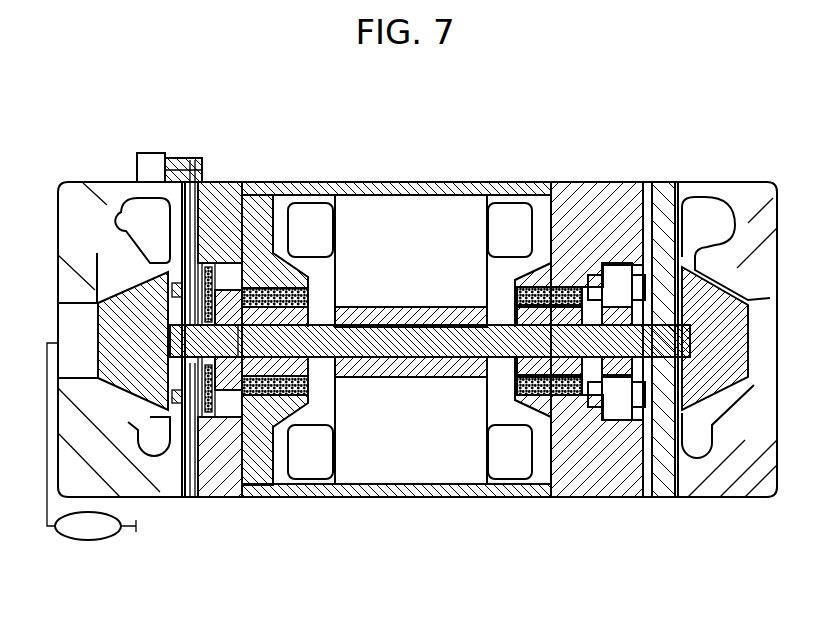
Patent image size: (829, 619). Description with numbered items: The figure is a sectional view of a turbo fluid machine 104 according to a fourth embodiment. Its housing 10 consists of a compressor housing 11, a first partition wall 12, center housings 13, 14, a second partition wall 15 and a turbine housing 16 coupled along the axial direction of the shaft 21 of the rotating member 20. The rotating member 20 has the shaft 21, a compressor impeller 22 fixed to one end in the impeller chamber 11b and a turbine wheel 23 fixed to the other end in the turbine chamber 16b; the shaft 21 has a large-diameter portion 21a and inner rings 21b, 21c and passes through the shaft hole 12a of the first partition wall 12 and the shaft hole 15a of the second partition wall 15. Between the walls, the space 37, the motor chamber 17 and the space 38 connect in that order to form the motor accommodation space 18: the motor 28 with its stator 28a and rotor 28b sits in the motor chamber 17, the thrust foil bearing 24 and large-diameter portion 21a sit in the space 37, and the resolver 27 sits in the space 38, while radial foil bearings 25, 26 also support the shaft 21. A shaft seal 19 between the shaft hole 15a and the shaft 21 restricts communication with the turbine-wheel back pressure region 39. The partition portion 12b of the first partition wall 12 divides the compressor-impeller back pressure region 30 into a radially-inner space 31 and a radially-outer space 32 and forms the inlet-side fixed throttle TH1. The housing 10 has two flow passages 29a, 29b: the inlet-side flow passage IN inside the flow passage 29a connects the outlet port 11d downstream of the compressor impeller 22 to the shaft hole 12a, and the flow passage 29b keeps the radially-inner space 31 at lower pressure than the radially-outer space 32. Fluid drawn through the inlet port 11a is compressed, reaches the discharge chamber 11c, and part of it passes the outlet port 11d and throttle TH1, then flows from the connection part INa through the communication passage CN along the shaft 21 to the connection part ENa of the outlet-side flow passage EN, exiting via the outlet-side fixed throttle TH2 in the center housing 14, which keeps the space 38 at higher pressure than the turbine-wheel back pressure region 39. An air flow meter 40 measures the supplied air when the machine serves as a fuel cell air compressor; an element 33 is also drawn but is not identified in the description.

The turbo fluid machine 104 is at (82, 154).
The housing 10 is at (108, 129).
The rotating member 20 is at (165, 568).
The compressor housing 11 is at (112, 186).
The inlet port 11a is at (70, 377).
The impeller chamber 11b is at (58, 392).
The discharge chamber 11c is at (125, 230).
The outlet port 11d is at (150, 173).
The first partition wall 12 is at (225, 212).
The shaft hole 12a is at (204, 341).
The partition portion 12b is at (168, 333).
The center housing 13 is at (425, 180).
The center housing 14 is at (598, 200).
The second partition wall 15 is at (663, 210).
The shaft hole 15a is at (652, 350).
The turbine housing 16 is at (737, 206).
The turbine chamber 16b is at (735, 272).
The motor chamber 17 is at (371, 200).
The motor accommodation space 18 is at (327, 233).
The shaft seal 19 is at (694, 360).
The shaft 21 is at (447, 342).
The large-diameter portion 21a is at (228, 370).
The inner ring 21b is at (300, 344).
The inner ring 21c is at (545, 338).
The compressor impeller 22 is at (150, 392).
The turbine wheel 23 is at (723, 385).
The thrust foil bearing 24 is at (211, 268).
The radial foil bearing 25 is at (240, 396).
The radial foil bearing 26 is at (572, 396).
The resolver 27 is at (617, 398).
The motor 28 is at (358, 534).
The stator 28a is at (374, 456).
The rotor 28b is at (398, 372).
The flow passage 29a is at (177, 162).
The flow passage 29b is at (194, 440).
The compressor-impeller back pressure region 30 is at (107, 298).
The radially-inner space 31 is at (137, 320).
The radially-outer space 32 is at (170, 285).
The seal body 33 is at (172, 306).
The space 37 is at (240, 472).
The space 38 is at (692, 340).
The turbine-wheel back pressure region 39 is at (695, 312).
The air flow meter 40 is at (87, 541).
The inlet-side flow passage IN is at (192, 247).
The connection part INa is at (232, 320).
The inlet-side fixed throttle TH1 is at (236, 285).
The outlet-side fixed throttle TH2 is at (640, 255).
The outlet-side flow passage EN is at (642, 213).
The connection part ENa is at (640, 271).
The communication passage CN is at (428, 366).